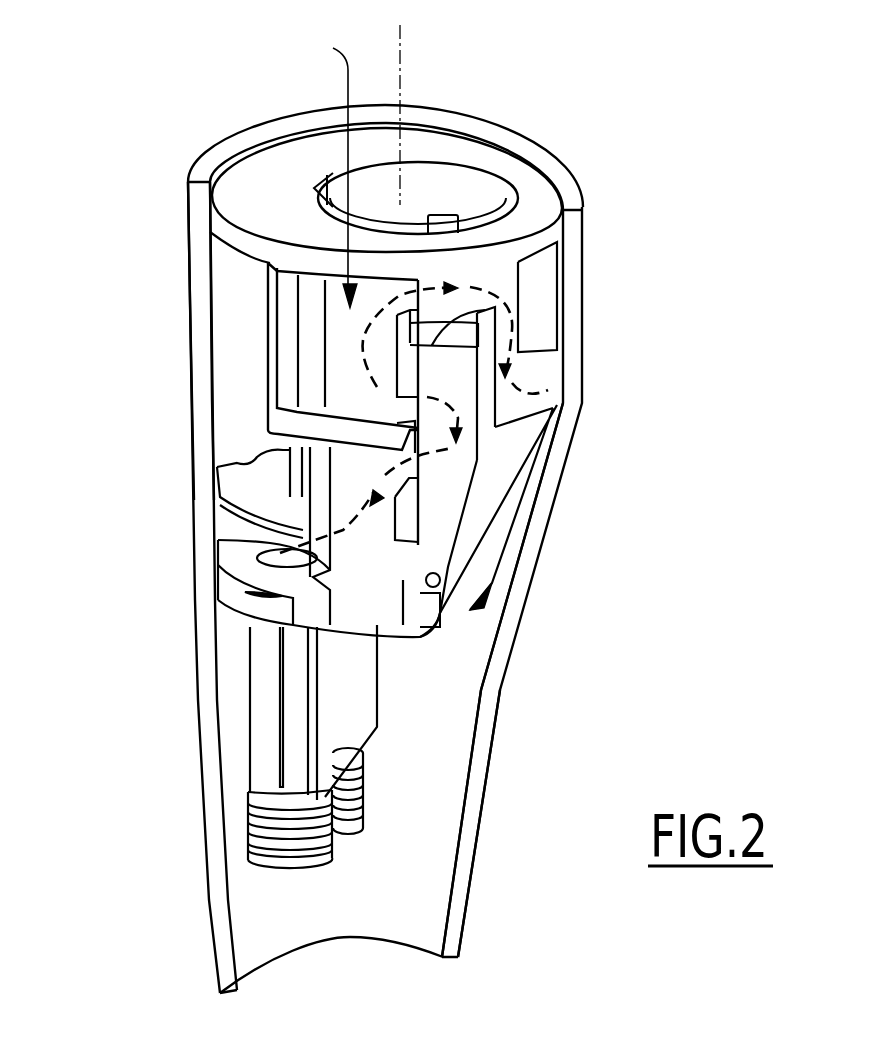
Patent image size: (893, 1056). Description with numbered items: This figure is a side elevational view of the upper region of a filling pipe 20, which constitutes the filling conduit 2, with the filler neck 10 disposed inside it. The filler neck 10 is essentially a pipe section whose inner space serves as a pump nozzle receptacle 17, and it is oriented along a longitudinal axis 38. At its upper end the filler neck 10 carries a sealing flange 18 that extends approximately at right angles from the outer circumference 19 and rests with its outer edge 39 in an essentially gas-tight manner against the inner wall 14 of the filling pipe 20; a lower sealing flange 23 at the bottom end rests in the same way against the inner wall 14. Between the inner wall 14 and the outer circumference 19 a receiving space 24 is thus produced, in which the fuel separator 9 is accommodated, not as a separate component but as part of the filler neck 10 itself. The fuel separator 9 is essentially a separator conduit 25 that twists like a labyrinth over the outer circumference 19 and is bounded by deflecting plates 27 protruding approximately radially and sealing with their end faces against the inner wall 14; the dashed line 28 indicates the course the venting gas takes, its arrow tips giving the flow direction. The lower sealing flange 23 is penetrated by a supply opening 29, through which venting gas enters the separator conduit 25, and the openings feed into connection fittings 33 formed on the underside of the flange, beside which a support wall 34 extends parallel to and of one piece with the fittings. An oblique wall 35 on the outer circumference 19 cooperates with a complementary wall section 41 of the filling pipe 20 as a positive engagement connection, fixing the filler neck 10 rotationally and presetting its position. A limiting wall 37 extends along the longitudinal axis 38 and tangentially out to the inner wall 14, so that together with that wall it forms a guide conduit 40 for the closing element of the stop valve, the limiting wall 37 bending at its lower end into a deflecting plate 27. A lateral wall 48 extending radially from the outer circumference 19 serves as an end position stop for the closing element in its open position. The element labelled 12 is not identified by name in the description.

The filling conduit 2 is at (202, 455).
The fuel separator 9 is at (414, 287).
The filler neck 10 is at (211, 297).
The pin 12 is at (443, 577).
The inner wall 14 is at (223, 337).
The pump nozzle receptacle 17 is at (423, 180).
The sealing flange 18 is at (282, 172).
The outer circumference 19 is at (357, 395).
The filling pipe 20 is at (493, 668).
The sealing flange 23 is at (230, 603).
The receiving space 24 is at (245, 428).
The separator conduit 25 is at (527, 368).
The deflecting plates 27 is at (487, 355).
The dashed line 28 is at (480, 460).
The supply opening 29 is at (320, 546).
The connection fittings 33 is at (263, 710).
The support wall 34 is at (360, 690).
The oblique wall 35 is at (523, 486).
The limiting wall 37 is at (283, 285).
The longitudinal axis 38 is at (402, 48).
The outer edge 39 is at (231, 224).
The guide conduit 40 is at (237, 385).
The wall section 41 is at (247, 305).
The lateral wall 48 is at (233, 480).